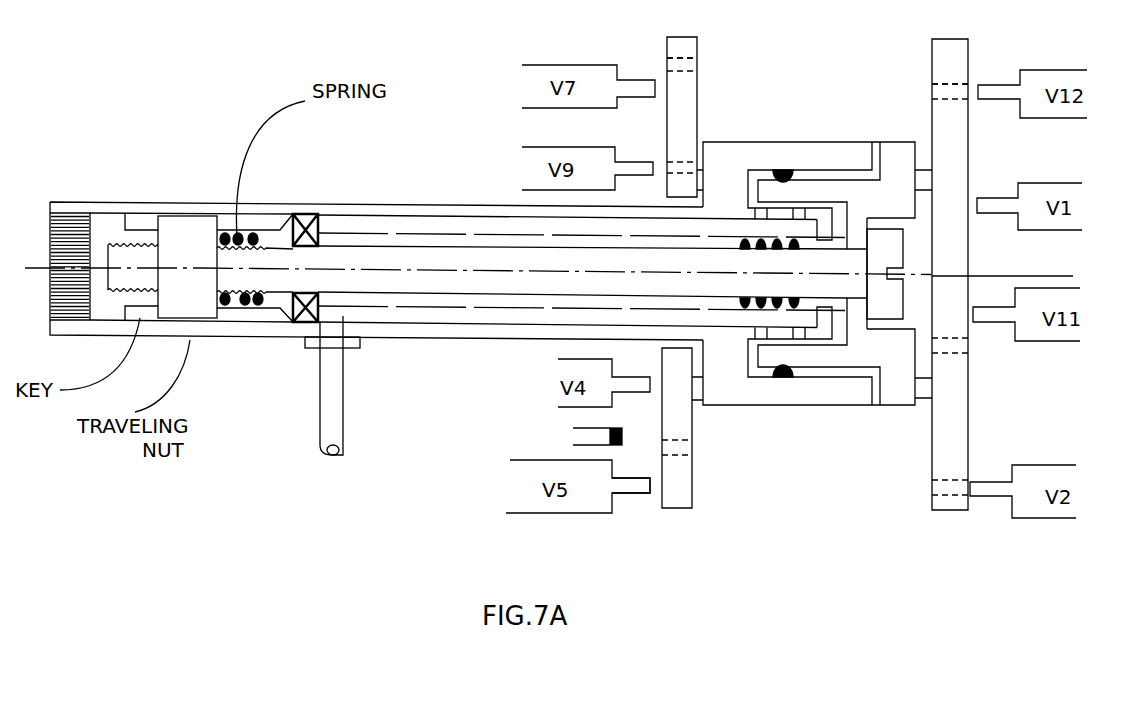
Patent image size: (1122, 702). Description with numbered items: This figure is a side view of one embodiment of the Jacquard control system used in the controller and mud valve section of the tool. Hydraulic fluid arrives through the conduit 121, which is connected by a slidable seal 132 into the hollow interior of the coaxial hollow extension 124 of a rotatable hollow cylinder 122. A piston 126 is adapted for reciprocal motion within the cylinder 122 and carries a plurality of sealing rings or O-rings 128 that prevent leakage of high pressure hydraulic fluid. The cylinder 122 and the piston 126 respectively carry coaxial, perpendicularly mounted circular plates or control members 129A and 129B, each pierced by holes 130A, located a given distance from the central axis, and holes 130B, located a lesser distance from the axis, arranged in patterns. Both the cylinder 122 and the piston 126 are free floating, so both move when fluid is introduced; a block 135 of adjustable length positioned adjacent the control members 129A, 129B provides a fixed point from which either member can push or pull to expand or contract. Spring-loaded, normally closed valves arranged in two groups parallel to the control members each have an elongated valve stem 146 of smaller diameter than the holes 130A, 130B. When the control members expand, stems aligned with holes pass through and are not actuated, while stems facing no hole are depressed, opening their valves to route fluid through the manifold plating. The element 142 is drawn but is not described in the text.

The conduit 121 is at (343, 412).
The rotatable hollow cylinder 122 is at (760, 407).
The coaxial hollow extension 124 is at (558, 340).
The piston 126 is at (897, 367).
The sealing rings 128 is at (782, 170).
The control member 129A is at (697, 47).
The control member 129B is at (968, 71).
The holes 130A is at (667, 58).
The holes 130B is at (667, 163).
The slidable seal 132 is at (335, 337).
The block 135 is at (583, 440).
The splined key member 142 is at (48, 245).
The valve stem 146 is at (635, 494).